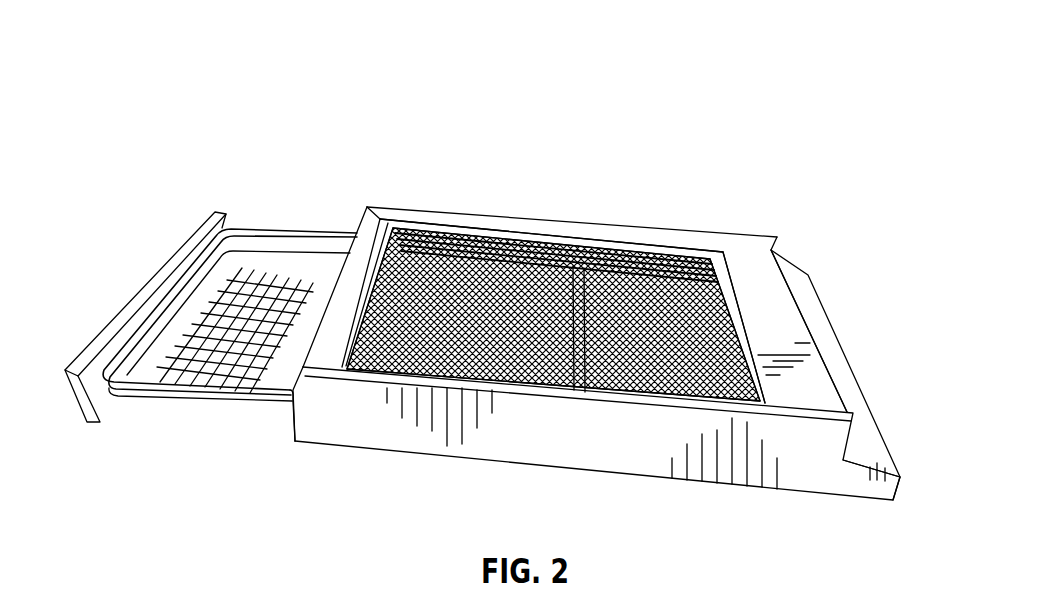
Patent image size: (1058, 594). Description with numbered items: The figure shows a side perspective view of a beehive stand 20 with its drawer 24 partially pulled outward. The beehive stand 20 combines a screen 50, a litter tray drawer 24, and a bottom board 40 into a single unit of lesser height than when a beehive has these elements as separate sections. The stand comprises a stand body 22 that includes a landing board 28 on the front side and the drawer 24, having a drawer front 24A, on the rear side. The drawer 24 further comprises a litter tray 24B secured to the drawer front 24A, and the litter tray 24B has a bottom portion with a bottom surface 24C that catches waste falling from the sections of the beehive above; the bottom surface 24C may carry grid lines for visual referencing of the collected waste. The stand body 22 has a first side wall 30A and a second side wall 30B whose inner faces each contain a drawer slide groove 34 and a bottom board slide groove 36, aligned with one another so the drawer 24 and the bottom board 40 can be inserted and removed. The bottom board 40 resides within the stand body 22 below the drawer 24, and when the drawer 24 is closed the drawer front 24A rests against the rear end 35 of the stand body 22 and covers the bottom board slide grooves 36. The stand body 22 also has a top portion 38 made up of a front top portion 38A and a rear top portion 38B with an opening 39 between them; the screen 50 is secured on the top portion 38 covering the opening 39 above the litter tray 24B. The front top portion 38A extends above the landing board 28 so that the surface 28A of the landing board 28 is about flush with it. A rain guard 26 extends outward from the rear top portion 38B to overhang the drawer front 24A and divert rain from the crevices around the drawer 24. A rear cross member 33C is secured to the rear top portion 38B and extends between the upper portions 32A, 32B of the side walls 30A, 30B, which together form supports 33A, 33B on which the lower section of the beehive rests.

The beehive stand 20 is at (812, 158).
The stand body 22 is at (630, 222).
The drawer 24 is at (273, 219).
The drawer front 24A is at (130, 301).
The litter tray 24B is at (220, 395).
The bottom surface 24C is at (230, 273).
The rain guard 26 is at (287, 370).
The landing board 28 is at (835, 347).
The surface of the landing board 28A is at (868, 440).
The first side wall 30A is at (527, 217).
The second side wall 30B is at (664, 480).
The upper portion of the first side wall 32A is at (570, 220).
The upper portion of the second side wall 32B is at (856, 405).
The support 33A is at (392, 209).
The support 33B is at (292, 391).
The rear cross member 33C is at (350, 255).
The drawer slide groove 34 is at (673, 253).
The rear end of the stand body 35 is at (293, 432).
The bottom board slide groove 36 is at (362, 299).
The top portion 38 is at (783, 274).
The front top portion 38A is at (770, 317).
The rear top portion 38B is at (378, 266).
The opening 39 is at (578, 273).
The bottom board 40 is at (723, 277).
The screen 50 is at (460, 255).